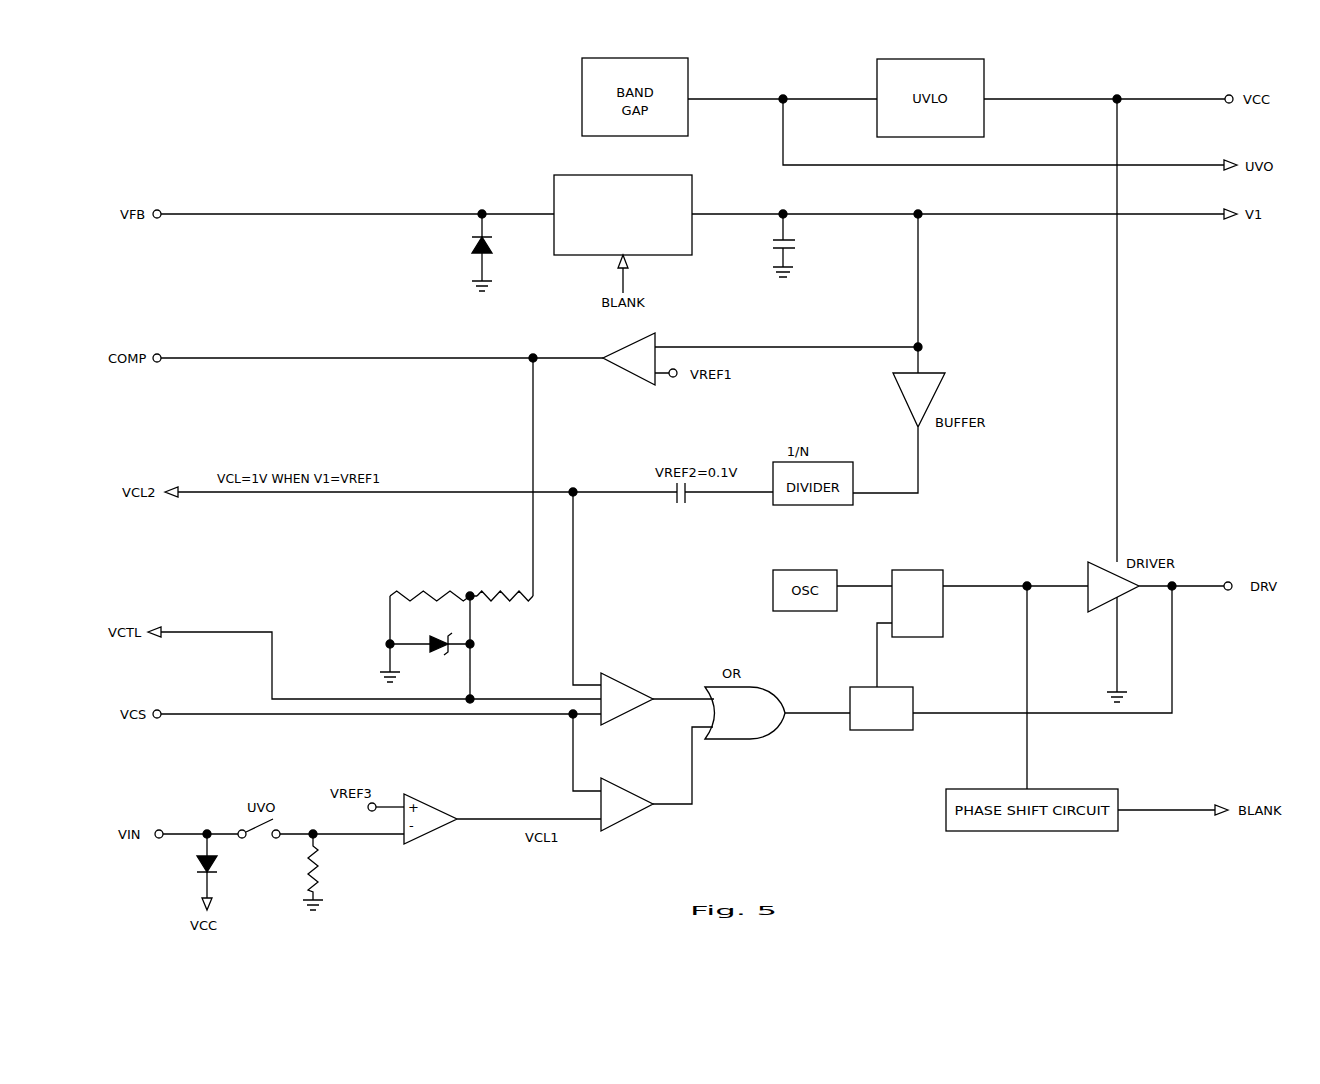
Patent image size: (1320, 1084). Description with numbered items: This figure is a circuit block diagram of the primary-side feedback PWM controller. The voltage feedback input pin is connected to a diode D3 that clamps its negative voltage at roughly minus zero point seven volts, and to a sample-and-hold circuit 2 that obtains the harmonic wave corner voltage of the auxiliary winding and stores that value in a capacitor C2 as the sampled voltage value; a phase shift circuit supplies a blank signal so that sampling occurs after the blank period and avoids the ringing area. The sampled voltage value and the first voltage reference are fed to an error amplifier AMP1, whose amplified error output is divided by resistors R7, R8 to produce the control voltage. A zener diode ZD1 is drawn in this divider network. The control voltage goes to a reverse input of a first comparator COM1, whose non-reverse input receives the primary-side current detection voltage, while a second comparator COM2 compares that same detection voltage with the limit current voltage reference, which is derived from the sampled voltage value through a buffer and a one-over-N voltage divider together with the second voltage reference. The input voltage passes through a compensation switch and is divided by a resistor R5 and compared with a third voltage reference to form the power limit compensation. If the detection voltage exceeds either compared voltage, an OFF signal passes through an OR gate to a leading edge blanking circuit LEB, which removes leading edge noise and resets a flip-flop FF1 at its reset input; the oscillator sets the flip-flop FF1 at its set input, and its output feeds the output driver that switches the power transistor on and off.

The sample-and-hold circuit 2 is at (692, 195).
The diode D3 is at (495, 252).
The capacitor C2 is at (772, 245).
The error amplifier AMP1 is at (753, 359).
The resistor R8 is at (430, 588).
The resistor R7 is at (505, 588).
The zener diode ZD1 is at (430, 649).
The first comparator COM1 is at (636, 698).
The second comparator COM2 is at (631, 801).
The leading edge blanking circuit LEB is at (881, 708).
The flip-flop FF1 is at (917, 594).
The resistor R5 is at (304, 872).